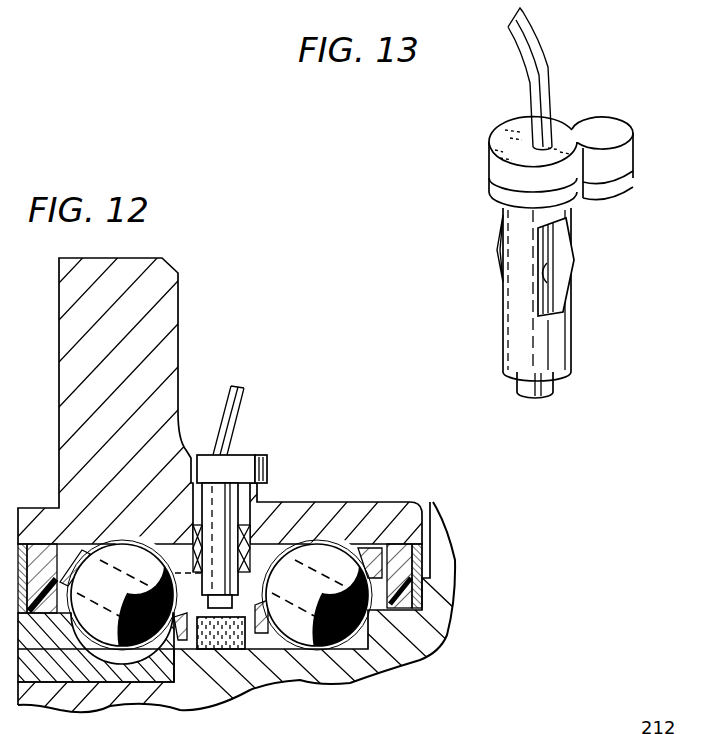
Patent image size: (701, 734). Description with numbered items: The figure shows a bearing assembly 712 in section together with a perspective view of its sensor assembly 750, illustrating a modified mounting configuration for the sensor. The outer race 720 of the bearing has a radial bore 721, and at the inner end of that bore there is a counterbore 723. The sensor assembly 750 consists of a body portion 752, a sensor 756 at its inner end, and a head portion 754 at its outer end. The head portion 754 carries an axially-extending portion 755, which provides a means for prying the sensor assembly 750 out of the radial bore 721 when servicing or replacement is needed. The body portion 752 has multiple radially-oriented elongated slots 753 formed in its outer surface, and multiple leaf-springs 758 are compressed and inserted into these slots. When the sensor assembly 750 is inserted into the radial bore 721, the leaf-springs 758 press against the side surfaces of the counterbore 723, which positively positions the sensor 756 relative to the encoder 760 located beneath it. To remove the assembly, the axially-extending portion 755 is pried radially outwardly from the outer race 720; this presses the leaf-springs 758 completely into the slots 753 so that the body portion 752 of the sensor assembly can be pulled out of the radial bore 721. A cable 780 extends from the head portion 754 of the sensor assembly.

In FIG. 12, the bearing assembly 712 is at (268, 326).
In FIG. 12, the outer race 720 is at (178, 290).
In FIG. 12, the radial bore 721 is at (202, 520).
In FIG. 12, the counterbore 723 is at (252, 531).
In FIG. 12, the sensor assembly 750 is at (276, 487).
In FIG. 13, the sensor assembly 750 is at (545, 203).
In FIG. 13, the body portion 752 is at (565, 335).
In FIG. 13, the elongated slots 753 is at (543, 277).
In FIG. 13, the head portion 754 is at (503, 135).
In FIG. 12, the axially-extending portion 755 is at (268, 470).
In FIG. 13, the axially-extending portion 755 is at (609, 130).
In FIG. 13, the sensor 756 is at (522, 386).
In FIG. 13, the leaf-springs 758 is at (498, 250).
In FIG. 12, the encoder 760 is at (222, 650).
In FIG. 12, the cable 780 is at (244, 398).
In FIG. 13, the cable 780 is at (537, 105).